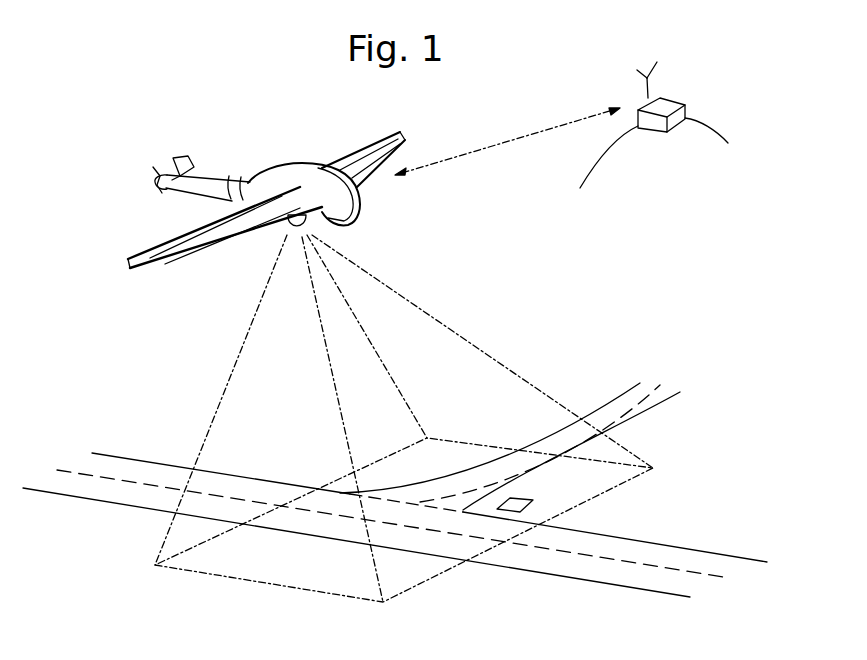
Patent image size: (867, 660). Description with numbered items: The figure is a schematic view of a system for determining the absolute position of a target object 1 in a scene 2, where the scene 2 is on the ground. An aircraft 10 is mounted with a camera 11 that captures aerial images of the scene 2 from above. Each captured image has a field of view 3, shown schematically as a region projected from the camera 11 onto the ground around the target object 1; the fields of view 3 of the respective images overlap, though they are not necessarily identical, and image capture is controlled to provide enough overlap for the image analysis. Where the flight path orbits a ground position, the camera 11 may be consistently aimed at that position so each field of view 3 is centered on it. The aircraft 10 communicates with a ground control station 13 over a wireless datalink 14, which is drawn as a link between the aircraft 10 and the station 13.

The target object 1 is at (533, 498).
The scene 2 is at (657, 487).
The field of view 3 is at (452, 572).
The aircraft 10 is at (280, 166).
The camera 11 is at (307, 219).
The ground control station 13 is at (683, 98).
The wireless datalink 14 is at (543, 130).